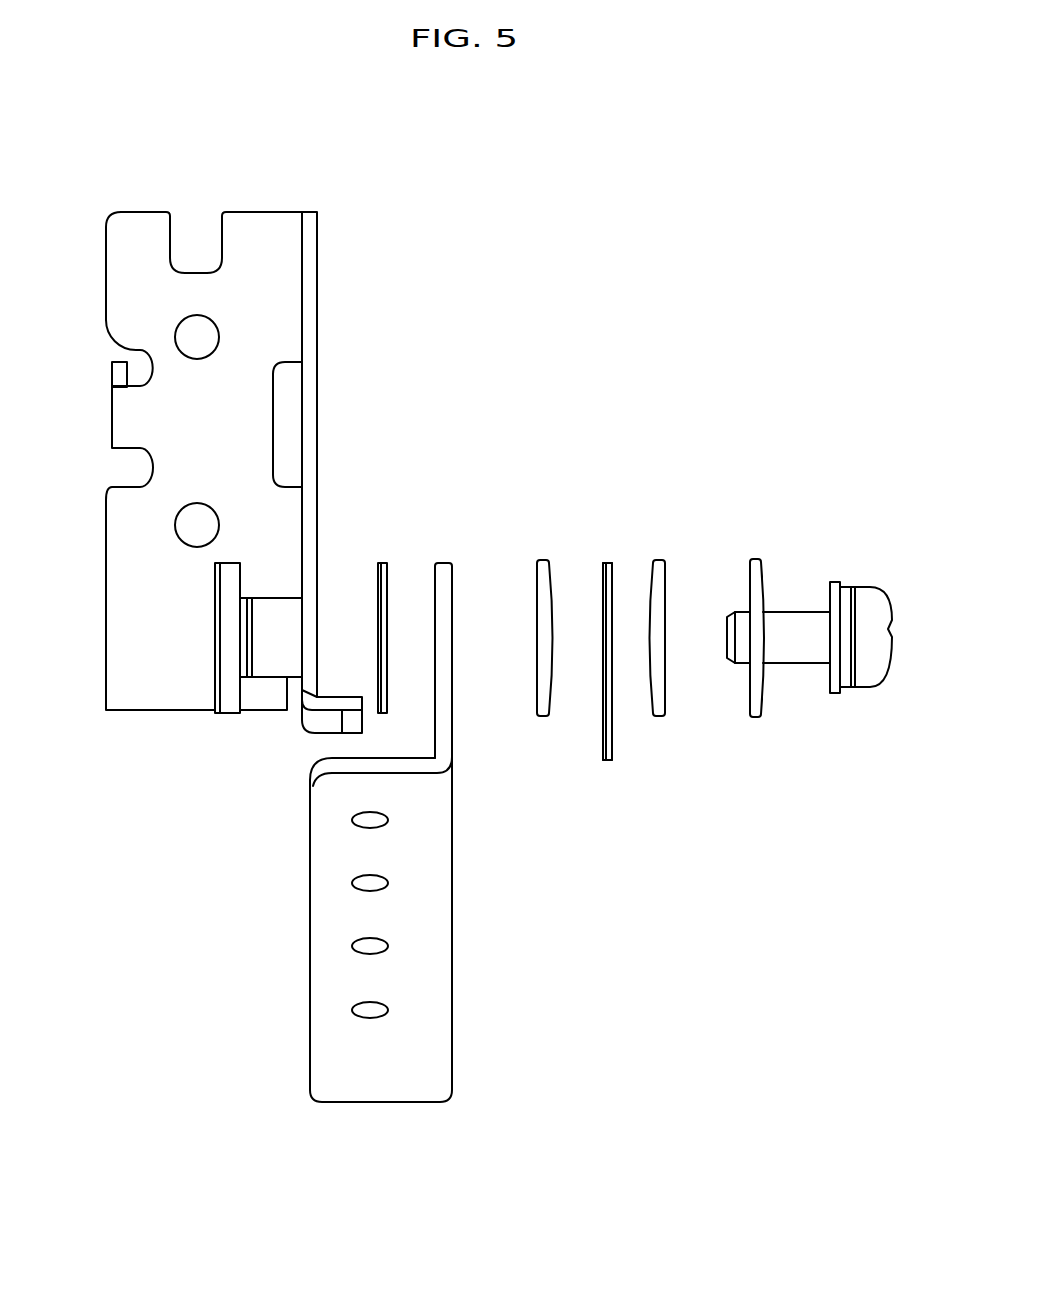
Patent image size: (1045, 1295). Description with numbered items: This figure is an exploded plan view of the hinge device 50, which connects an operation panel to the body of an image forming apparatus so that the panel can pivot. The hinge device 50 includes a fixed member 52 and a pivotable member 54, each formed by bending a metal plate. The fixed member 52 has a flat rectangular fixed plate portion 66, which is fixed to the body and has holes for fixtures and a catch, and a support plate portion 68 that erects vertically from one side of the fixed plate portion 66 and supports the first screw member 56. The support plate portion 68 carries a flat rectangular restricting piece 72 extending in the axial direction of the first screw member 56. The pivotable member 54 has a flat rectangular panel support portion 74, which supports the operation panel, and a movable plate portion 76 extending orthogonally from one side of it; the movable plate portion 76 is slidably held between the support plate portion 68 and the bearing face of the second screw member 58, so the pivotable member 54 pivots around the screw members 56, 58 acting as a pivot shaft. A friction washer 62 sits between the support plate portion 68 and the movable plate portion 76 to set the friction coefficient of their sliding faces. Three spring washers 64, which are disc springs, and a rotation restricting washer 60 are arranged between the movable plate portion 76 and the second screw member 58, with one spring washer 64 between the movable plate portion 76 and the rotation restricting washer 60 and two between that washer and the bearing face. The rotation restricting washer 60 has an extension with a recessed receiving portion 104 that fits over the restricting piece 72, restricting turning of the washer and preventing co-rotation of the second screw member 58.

The hinge device 50 is at (201, 73).
The fixed member 52 is at (285, 195).
The pivotable member 54 is at (468, 937).
The first screw member 56 is at (228, 695).
The second screw member 58 is at (875, 624).
The rotation restricting washer 60 is at (608, 560).
The friction washer 62 is at (383, 561).
The spring washers 64 is at (545, 560).
The fixed plate portion 66 is at (137, 615).
The support plate portion 68 is at (305, 510).
The restricting piece 72 is at (312, 725).
The panel support portion 74 is at (336, 1068).
The movable plate portion 76 is at (449, 563).
The receiving portion 104 is at (612, 750).